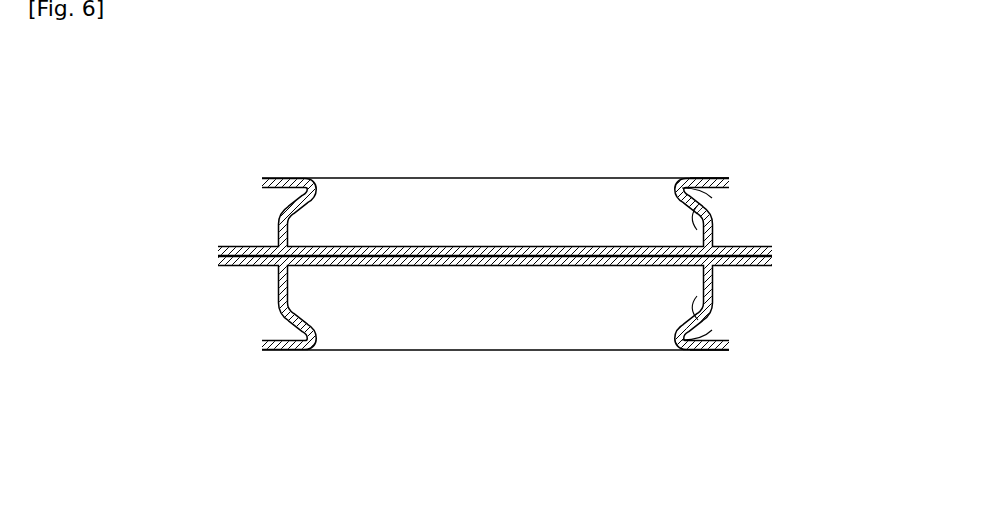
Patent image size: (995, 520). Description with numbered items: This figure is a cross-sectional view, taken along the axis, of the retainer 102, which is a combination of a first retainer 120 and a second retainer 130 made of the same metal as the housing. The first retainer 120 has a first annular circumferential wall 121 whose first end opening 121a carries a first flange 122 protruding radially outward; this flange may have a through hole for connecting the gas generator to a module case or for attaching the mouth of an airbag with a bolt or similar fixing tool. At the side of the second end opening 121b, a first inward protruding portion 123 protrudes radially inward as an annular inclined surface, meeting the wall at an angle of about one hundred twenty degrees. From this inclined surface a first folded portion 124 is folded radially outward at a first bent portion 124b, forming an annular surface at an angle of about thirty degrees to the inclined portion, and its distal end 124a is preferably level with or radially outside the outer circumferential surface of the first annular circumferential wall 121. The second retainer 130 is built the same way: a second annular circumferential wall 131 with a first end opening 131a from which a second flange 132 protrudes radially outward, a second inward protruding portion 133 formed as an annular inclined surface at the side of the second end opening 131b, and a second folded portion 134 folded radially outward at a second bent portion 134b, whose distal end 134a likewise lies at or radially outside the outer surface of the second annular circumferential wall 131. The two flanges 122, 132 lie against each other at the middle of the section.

The retainer 102 is at (428, 257).
The first retainer 120 is at (460, 217).
The first annular circumferential wall 121 is at (738, 227).
The first end opening of the first annular circumferential wall 121a is at (495, 239).
The second end opening of the first annular circumferential wall 121b is at (495, 195).
The first flange 122 is at (530, 233).
The first inward protruding portion 123 is at (744, 195).
The first folded portion 124 is at (714, 152).
The distal end of the first folded portion 124a is at (754, 168).
The first bent portion 124b is at (624, 171).
The second retainer 130 is at (460, 303).
The second annular circumferential wall 131 is at (743, 290).
The first end opening of the second annular circumferential wall 131a is at (495, 272).
The second end opening of the second annular circumferential wall 131b is at (495, 333).
The second flange 132 is at (529, 279).
The second inward protruding portion 133 is at (732, 325).
The second folded portion 134 is at (713, 378).
The distal end of the second folded portion 134a is at (752, 360).
The second bent portion 134b is at (621, 359).